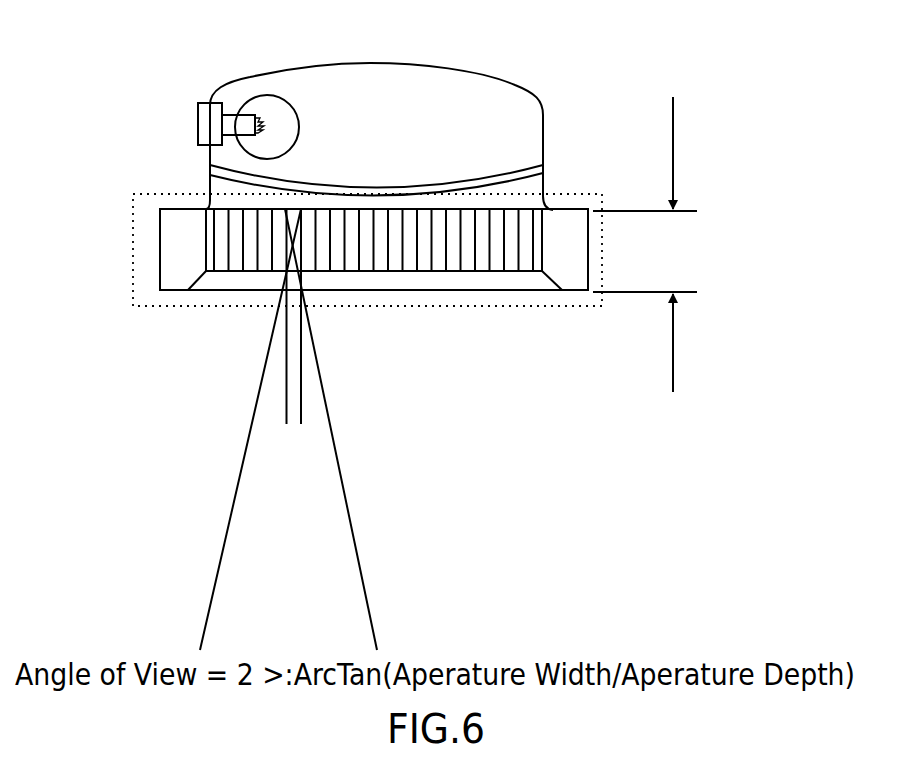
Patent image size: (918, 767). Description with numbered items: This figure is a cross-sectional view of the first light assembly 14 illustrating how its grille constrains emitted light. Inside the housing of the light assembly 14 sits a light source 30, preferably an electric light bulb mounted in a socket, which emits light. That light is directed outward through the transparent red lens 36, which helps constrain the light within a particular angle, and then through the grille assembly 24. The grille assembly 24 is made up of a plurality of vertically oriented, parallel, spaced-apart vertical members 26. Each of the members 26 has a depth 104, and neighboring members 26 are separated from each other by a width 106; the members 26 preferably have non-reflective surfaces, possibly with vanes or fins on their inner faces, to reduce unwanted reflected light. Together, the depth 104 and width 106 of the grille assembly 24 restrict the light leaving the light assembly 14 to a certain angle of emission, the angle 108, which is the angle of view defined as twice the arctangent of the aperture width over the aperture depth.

The first light assembly 14 is at (228, 82).
The light source 30 is at (288, 130).
The transparent lens 36 is at (380, 190).
The grille assembly 24 is at (500, 210).
The vertical members 26 is at (488, 265).
The depth 104 is at (710, 211).
The width 106 is at (210, 400).
The angle 108 is at (358, 608).